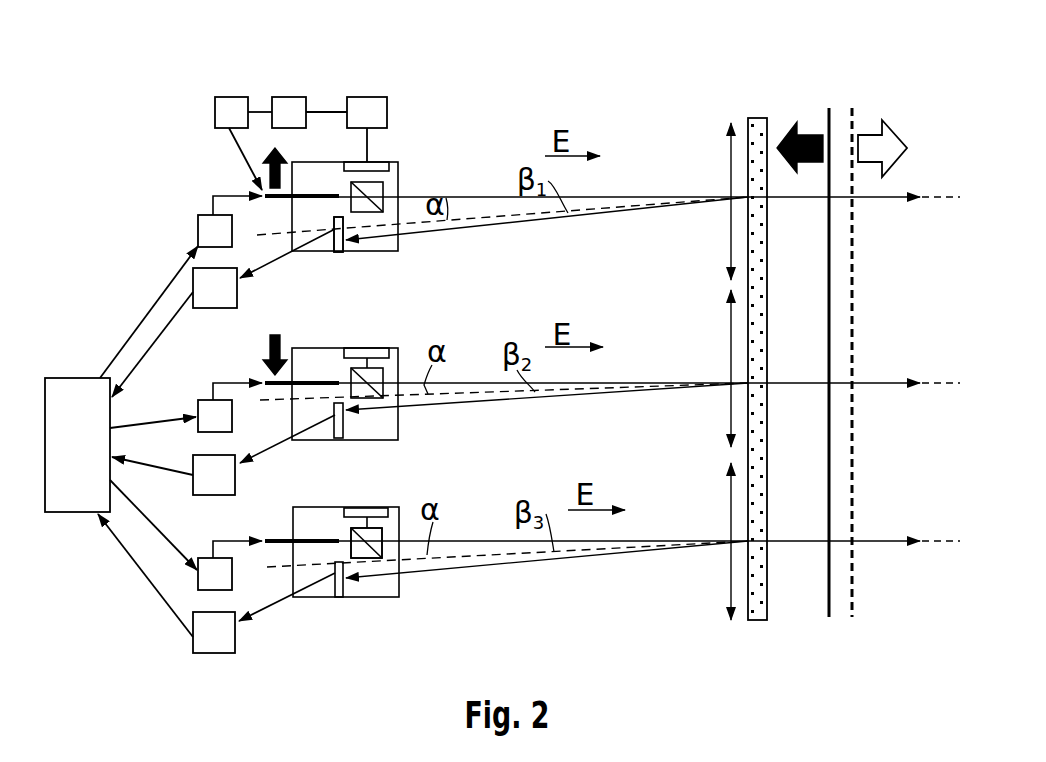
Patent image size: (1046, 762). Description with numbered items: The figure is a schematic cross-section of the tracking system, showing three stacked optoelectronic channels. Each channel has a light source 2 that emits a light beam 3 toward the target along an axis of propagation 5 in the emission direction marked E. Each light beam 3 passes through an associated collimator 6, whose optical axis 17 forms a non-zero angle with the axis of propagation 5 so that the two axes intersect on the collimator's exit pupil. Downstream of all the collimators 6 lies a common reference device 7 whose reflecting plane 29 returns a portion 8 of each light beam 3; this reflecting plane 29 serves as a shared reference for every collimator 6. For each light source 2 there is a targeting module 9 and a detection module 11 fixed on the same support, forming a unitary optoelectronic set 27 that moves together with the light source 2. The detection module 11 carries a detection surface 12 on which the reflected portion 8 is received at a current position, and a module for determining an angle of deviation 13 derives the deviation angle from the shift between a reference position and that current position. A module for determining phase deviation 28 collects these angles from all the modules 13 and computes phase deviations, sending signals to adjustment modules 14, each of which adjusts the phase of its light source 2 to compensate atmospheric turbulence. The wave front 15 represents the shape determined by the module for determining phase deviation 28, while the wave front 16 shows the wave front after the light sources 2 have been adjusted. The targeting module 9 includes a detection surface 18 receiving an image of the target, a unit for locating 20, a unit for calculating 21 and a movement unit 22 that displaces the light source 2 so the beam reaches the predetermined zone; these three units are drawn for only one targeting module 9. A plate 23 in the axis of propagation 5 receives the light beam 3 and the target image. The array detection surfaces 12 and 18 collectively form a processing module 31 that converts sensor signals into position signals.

The light source 2 is at (320, 193).
The light beam 3 is at (470, 196).
The axis of propagation 5 is at (942, 196).
The collimator 6 is at (729, 182).
The reference device 7 is at (754, 118).
The portion of the light beam 8 is at (476, 227).
The targeting module 9 is at (385, 162).
The detection module 11 is at (332, 253).
The detection surface 12 is at (349, 226).
The module for determining an angle of deviation 13 is at (212, 308).
The adjustment module 14 is at (197, 227).
The wave front 15 is at (824, 120).
The wave front 16 is at (854, 122).
The optical axis 17 is at (547, 214).
The detection surface 18 is at (386, 180).
The unit for locating 20 is at (378, 97).
The unit for calculating 21 is at (290, 97).
The movement unit 22 is at (226, 97).
The plate 23 is at (334, 221).
The unitary optoelectronic set 27 is at (398, 186).
The module for determining phase deviation 28 is at (68, 514).
The reflecting plane 29 is at (745, 290).
The processing module 31 is at (464, 184).